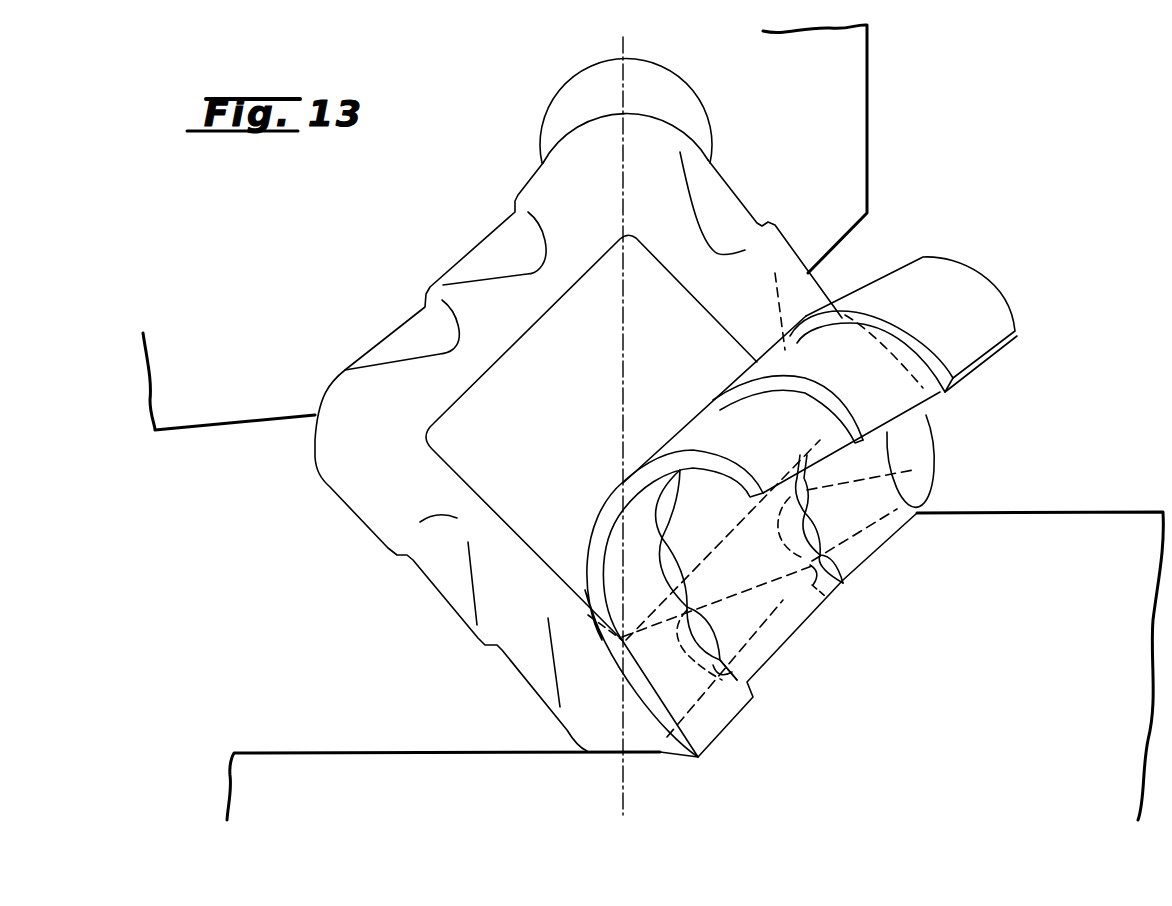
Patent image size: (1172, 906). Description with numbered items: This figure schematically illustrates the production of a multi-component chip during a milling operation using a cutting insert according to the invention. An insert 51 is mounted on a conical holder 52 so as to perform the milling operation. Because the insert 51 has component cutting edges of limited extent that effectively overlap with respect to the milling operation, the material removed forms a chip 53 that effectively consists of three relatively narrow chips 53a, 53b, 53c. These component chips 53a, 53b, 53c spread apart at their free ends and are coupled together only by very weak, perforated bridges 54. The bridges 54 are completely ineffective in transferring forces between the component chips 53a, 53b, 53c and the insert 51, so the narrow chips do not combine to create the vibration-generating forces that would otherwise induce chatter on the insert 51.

The insert 51 is at (597, 442).
The conical holder 52 is at (867, 127).
The chip 53 is at (937, 398).
The component chip 53a is at (777, 445).
The component chip 53b is at (875, 380).
The component chip 53c is at (979, 327).
The perforated bridge 54 is at (662, 540).